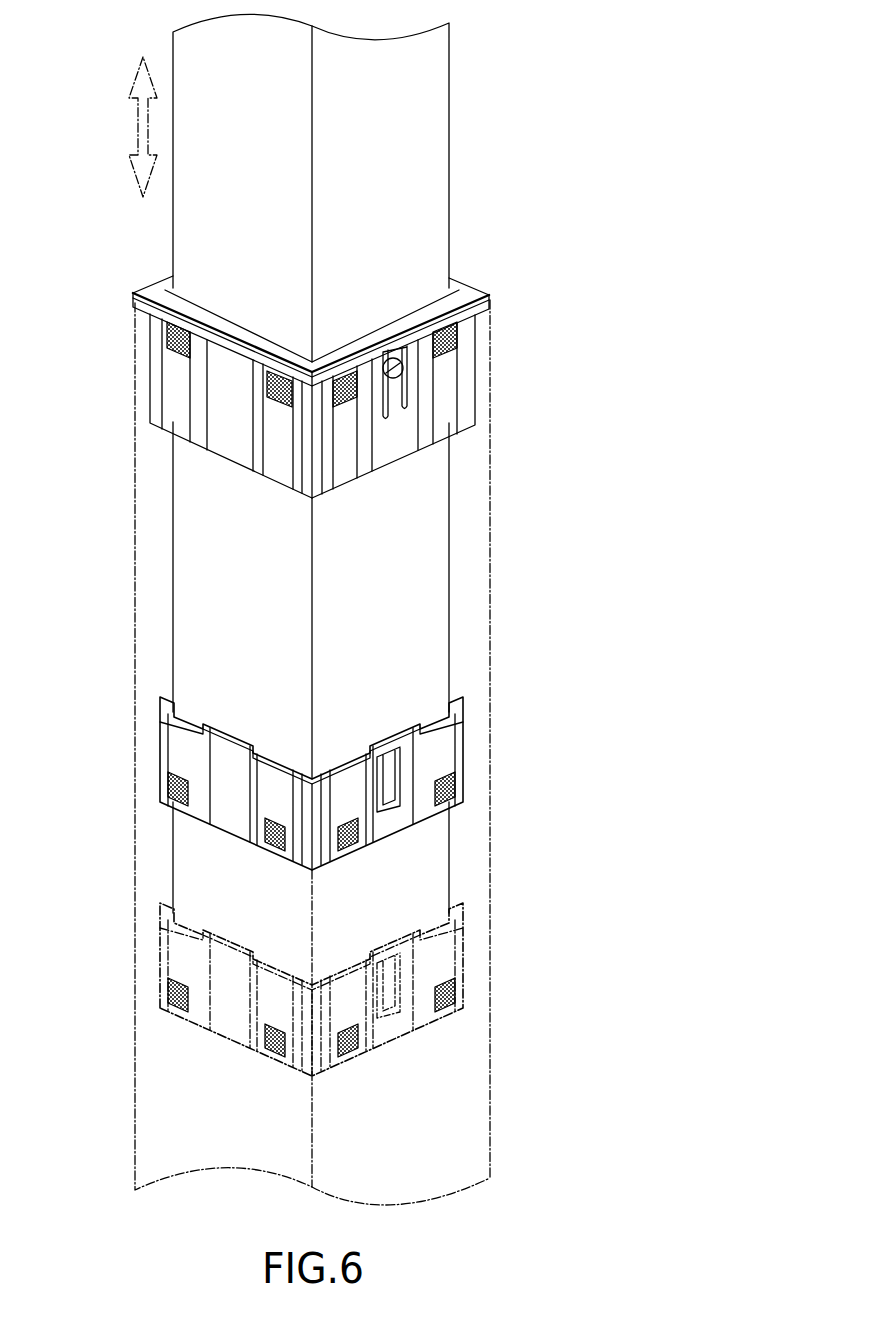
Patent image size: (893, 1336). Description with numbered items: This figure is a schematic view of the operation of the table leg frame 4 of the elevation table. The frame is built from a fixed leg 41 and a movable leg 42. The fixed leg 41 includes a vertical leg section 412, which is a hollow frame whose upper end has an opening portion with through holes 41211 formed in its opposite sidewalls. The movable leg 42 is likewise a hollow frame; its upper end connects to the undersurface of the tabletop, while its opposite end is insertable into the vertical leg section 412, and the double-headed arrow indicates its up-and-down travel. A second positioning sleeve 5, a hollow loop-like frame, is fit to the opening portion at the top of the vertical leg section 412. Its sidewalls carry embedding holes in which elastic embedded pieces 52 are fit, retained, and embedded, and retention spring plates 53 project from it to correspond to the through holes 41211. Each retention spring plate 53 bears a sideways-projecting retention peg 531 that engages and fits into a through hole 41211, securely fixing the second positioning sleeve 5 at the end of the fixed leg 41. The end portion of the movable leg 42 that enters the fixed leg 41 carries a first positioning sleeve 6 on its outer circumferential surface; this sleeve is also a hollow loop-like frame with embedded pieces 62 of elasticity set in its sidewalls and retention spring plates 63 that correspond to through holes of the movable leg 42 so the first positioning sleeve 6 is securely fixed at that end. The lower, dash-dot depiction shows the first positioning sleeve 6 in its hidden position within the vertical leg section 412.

The table leg frame 4 is at (484, 103).
The fixed leg 41 is at (508, 607).
The vertical leg section 412 is at (490, 555).
The through holes 41211 is at (400, 382).
The movable leg 42 is at (449, 183).
The second positioning sleeve 5 is at (329, 387).
The embedded pieces 52 is at (456, 333).
The retention spring plates 53 is at (404, 412).
The retention peg 531 is at (403, 367).
The first positioning sleeve 6 is at (312, 886).
The embedded pieces 62 is at (167, 785).
The retention spring plates 63 is at (392, 770).